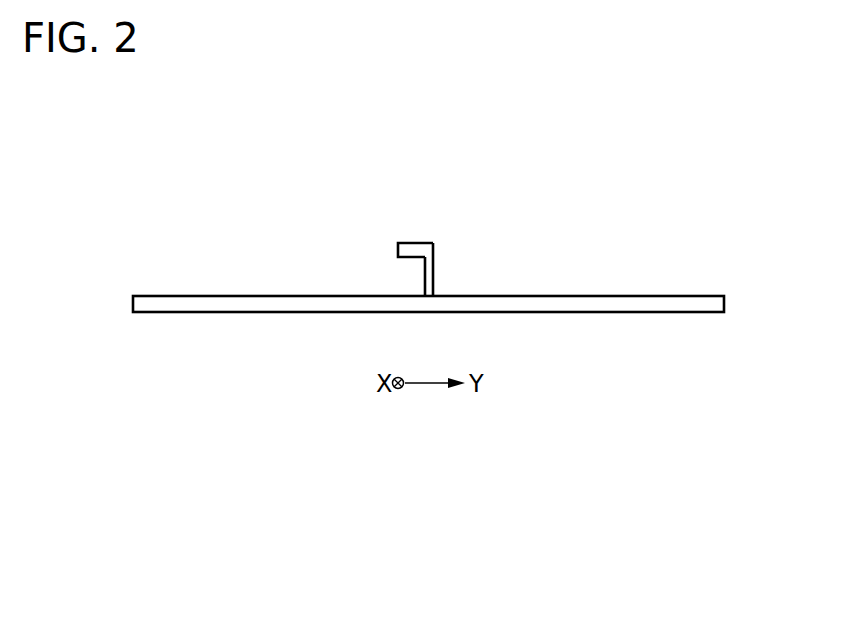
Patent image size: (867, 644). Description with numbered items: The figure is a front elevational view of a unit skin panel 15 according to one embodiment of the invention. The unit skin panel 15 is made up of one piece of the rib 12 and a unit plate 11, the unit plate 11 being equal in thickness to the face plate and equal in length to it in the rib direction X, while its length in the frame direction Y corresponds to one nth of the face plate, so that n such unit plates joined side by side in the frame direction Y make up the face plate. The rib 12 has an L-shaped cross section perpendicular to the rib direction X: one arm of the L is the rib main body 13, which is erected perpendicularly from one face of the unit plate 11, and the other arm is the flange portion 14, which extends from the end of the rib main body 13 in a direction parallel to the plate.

The unit plate 11 is at (228, 312).
The rib 12 is at (453, 209).
The rib main body 13 is at (433, 278).
The flange portion 14 is at (413, 248).
The unit skin panel 15 is at (229, 248).